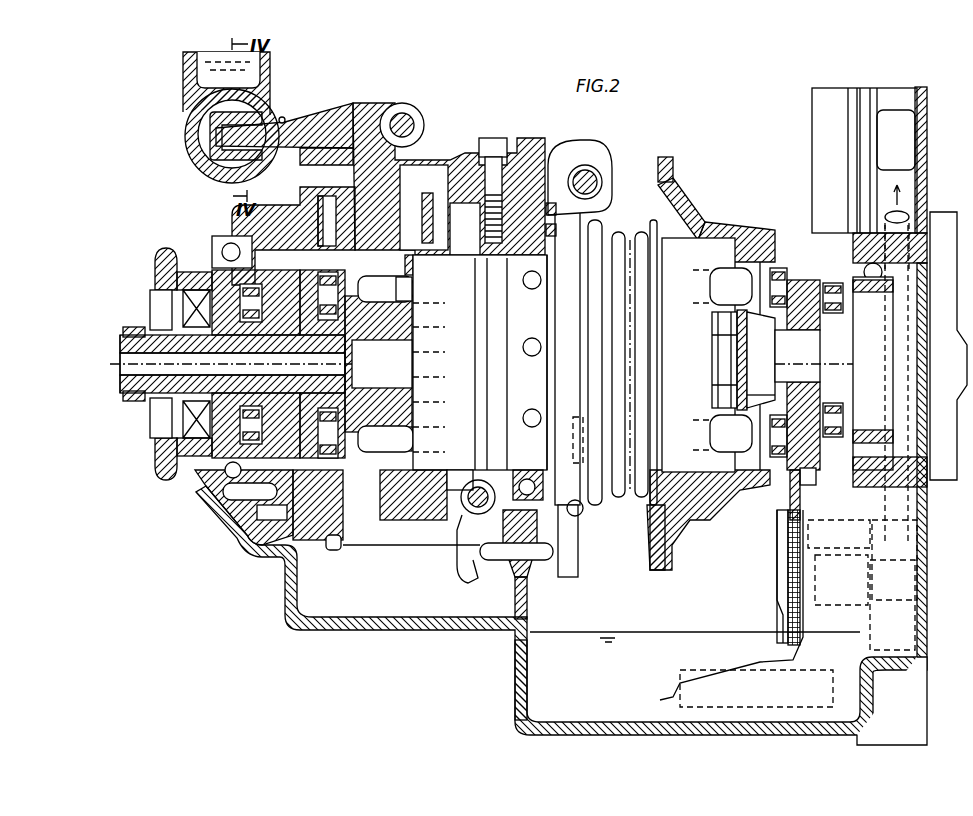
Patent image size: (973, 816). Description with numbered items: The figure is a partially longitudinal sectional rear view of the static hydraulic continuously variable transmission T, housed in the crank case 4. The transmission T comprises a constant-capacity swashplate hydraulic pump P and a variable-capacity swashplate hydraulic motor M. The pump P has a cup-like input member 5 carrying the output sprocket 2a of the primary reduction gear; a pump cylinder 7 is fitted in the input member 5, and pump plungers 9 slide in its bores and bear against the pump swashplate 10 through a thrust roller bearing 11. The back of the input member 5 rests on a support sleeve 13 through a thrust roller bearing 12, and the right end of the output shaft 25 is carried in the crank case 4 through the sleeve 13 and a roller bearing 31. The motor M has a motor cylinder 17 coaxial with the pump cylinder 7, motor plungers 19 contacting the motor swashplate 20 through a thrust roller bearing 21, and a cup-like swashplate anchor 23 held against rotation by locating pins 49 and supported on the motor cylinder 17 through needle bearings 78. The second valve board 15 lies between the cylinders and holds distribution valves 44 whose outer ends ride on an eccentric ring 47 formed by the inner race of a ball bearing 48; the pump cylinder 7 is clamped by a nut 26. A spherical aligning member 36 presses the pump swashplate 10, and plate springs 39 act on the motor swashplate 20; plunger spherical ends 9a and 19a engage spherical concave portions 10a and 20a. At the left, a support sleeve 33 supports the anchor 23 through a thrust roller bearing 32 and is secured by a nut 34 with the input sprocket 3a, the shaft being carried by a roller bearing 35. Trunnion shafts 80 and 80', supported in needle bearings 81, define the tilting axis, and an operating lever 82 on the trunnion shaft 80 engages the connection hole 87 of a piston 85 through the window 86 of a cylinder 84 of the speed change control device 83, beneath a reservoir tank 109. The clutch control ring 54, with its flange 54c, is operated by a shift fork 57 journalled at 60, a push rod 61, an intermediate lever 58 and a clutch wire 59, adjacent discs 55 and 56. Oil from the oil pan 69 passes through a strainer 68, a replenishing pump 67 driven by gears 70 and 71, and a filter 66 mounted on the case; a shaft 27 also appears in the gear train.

The speed change control device 83 is at (178, 85).
The reservoir tank 109 is at (262, 66).
The cylinder 84 is at (189, 128).
The piston 85 is at (215, 170).
The window 86 is at (282, 116).
The connection hole 87 is at (208, 145).
The operating lever 82 is at (318, 114).
The trunnion shaft 80 is at (443, 173).
The hydraulic motor M is at (453, 147).
The needle bearings 78 is at (448, 257).
The journal 60 is at (589, 176).
The ball bearing 48 is at (548, 212).
The eccentric ring 47 is at (552, 234).
The clutch control ring 54 is at (555, 323).
The clutch wire 59 is at (573, 418).
The shift fork 57 is at (578, 553).
The flange 54c is at (580, 512).
The clutch disc 55 is at (622, 366).
The plate 56 is at (622, 505).
The intermediate lever 58 is at (470, 570).
The push rod 61 is at (540, 560).
The output sprocket 2a is at (665, 161).
The continuously variable transmission T is at (694, 136).
The hydraulic pump P is at (704, 224).
The input member 5 is at (745, 242).
The pump cylinder 7 is at (698, 355).
The pump plungers 9 is at (731, 360).
The nut 26 is at (712, 385).
The spherical ends 9a is at (751, 360).
The aligning member 36 is at (759, 360).
The spherical concave portions 10a is at (756, 400).
The thrust roller bearing 11 is at (787, 275).
The pump swashplate 10 is at (768, 466).
The shaft 27 is at (815, 375).
The thrust roller bearing 12 is at (845, 305).
The support sleeve 13 is at (890, 382).
The roller bearing 31 is at (863, 270).
The gear 70 is at (810, 480).
The gear 71 is at (803, 500).
The filter 66 is at (822, 128).
The crank case 4 is at (285, 590).
The oil pan 69 is at (527, 672).
The replenishing pump 67 is at (775, 565).
The strainer 68 is at (727, 674).
The locating pins 49 is at (237, 222).
The needle bearings 81 is at (330, 217).
The roller bearing 35 is at (205, 250).
The input sprocket 3a is at (160, 450).
The nut 34 is at (131, 327).
The output shaft 25 is at (120, 352).
The support sleeve 33 is at (216, 390).
The thrust roller bearing 32 is at (262, 300).
The thrust roller bearing 21 is at (320, 453).
The plate springs 39 is at (378, 364).
The spherical ends 19a is at (385, 289).
The motor plungers 19 is at (405, 364).
The spherical concave portions 20a is at (385, 439).
The motor swashplate 20 is at (327, 504).
The swashplate anchor 23 is at (273, 508).
The trunnion shaft 80' is at (401, 554).
The motor cylinder 17 is at (463, 387).
The distribution valves 44 is at (523, 280).
The second valve board 15 is at (533, 362).